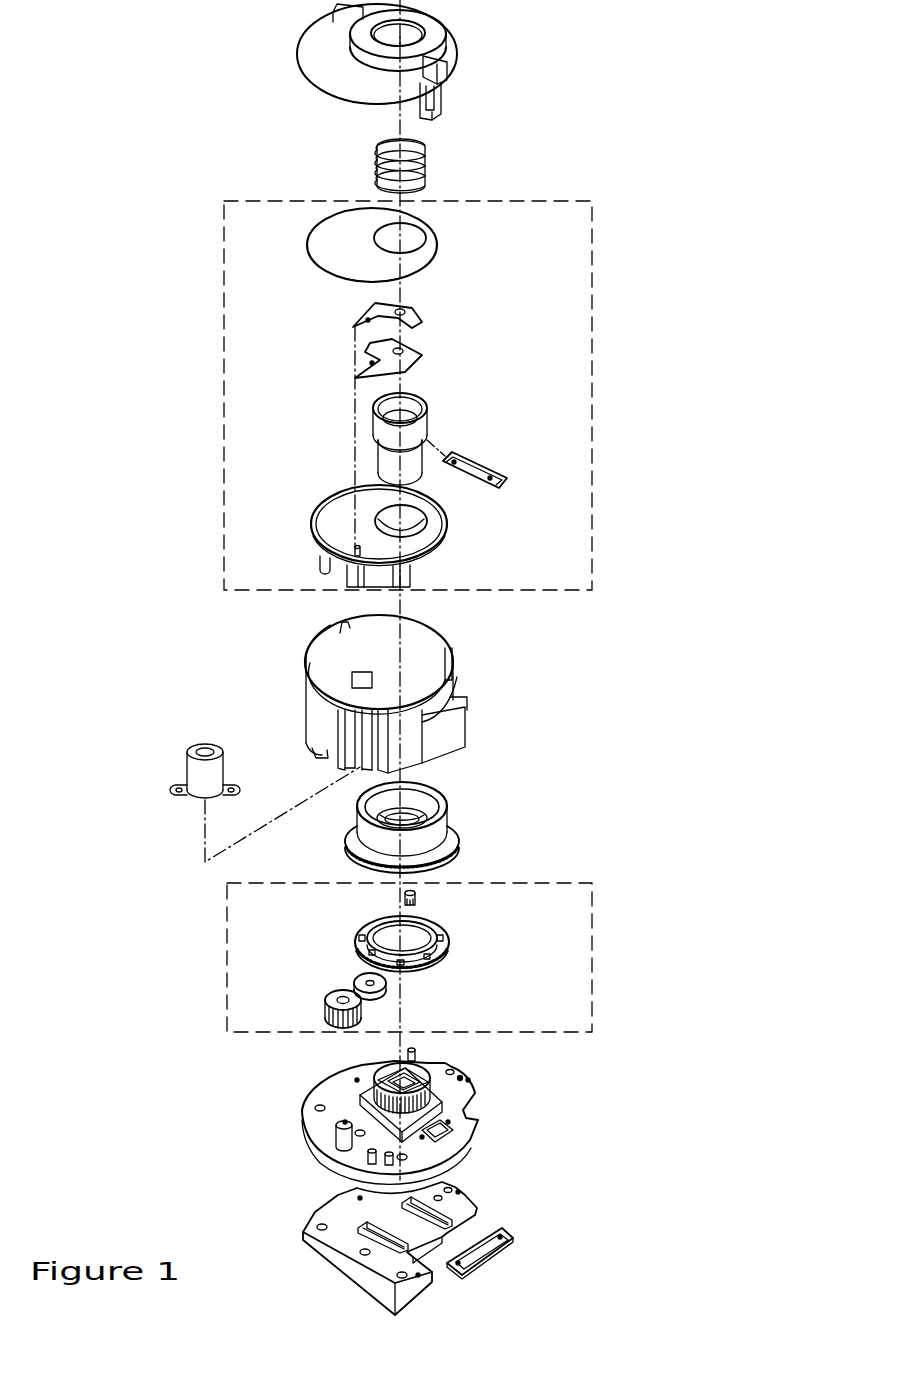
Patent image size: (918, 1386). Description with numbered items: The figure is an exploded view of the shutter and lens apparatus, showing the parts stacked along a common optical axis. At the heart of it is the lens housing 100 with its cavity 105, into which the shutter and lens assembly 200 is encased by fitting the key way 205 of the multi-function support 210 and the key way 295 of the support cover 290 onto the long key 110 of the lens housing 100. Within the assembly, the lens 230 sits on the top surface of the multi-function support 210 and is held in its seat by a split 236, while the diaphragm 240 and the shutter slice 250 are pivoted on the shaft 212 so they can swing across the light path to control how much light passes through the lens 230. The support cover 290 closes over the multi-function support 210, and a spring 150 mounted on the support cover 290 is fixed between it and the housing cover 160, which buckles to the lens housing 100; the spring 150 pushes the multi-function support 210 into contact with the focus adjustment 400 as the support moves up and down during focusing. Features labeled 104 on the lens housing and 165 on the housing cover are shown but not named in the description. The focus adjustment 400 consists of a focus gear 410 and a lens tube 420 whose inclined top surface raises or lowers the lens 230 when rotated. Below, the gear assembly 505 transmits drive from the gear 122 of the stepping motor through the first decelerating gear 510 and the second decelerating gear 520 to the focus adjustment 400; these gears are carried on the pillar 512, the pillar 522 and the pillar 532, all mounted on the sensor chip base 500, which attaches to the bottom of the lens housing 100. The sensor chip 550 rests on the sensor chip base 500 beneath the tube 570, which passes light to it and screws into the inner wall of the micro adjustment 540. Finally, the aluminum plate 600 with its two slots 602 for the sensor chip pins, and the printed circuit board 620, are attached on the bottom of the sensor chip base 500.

The lens housing 100 is at (450, 621).
The hook 104 is at (322, 757).
The cavity 105 is at (320, 660).
The long key 110 is at (455, 657).
The gear of stepping motor 122 is at (205, 800).
The spring 150 is at (440, 160).
The housing cover 160 is at (471, 42).
The tab 165 is at (441, 100).
The shutter and lens assembly 200 is at (596, 297).
The key way 205 is at (456, 523).
The multi-function support 210 is at (448, 560).
The shaft 212 is at (354, 550).
The lens 230 is at (436, 396).
The split 236 is at (490, 466).
The diaphragm 240 is at (432, 353).
The shutter slice 250 is at (432, 311).
The support cover 290 is at (440, 220).
The key way 295 is at (438, 238).
The focus adjustment 400 is at (458, 806).
The focus gear 410 is at (345, 852).
The lens tube 420 is at (440, 836).
The sensor chip base 500 is at (478, 1095).
The gear assembly 505 is at (596, 957).
The first decelerating gear 510 is at (355, 980).
The pillar 512 is at (368, 1160).
The second decelerating gear 520 is at (326, 1003).
The pillar 522 is at (336, 1138).
The pillar 532 is at (418, 1058).
The micro adjustment 540 is at (458, 931).
The sensor chip 550 is at (362, 1093).
The tube 570 is at (466, 1088).
The aluminum plate 600 is at (475, 1195).
The slots 602 is at (455, 1212).
The printed circuit board 620 is at (490, 1248).